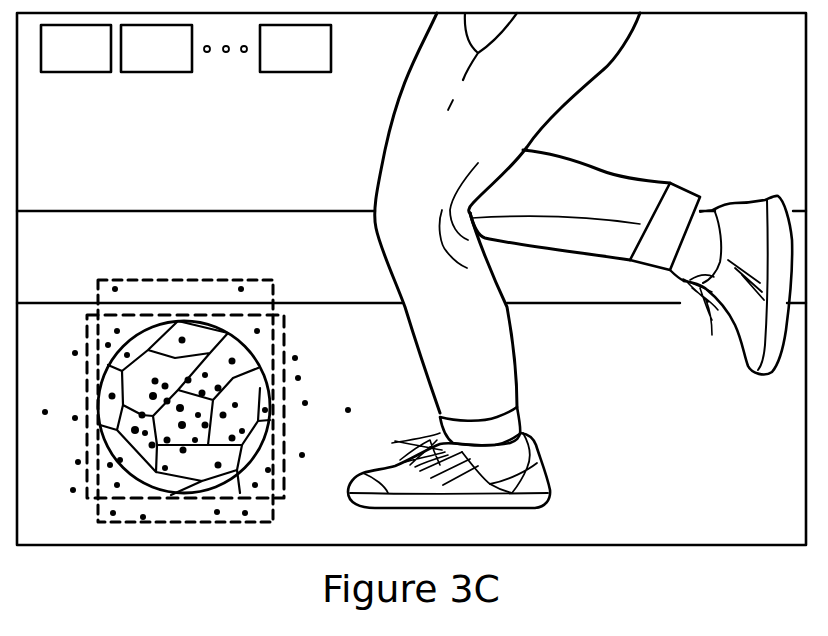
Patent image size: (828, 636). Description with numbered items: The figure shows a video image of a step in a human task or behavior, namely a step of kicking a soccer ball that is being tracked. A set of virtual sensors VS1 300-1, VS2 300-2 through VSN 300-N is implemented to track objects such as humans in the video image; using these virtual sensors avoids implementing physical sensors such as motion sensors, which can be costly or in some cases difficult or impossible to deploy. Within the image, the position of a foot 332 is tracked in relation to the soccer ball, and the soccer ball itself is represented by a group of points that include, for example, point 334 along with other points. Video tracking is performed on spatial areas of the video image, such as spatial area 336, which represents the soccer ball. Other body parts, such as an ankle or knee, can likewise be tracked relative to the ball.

The virtual sensor VS1 300-1 is at (76, 73).
The virtual sensor VS2 300-2 is at (157, 73).
The virtual sensor VSN 300-N is at (295, 73).
The foot 332 is at (738, 340).
The point 334 is at (240, 286).
The spatial area 336 is at (185, 278).